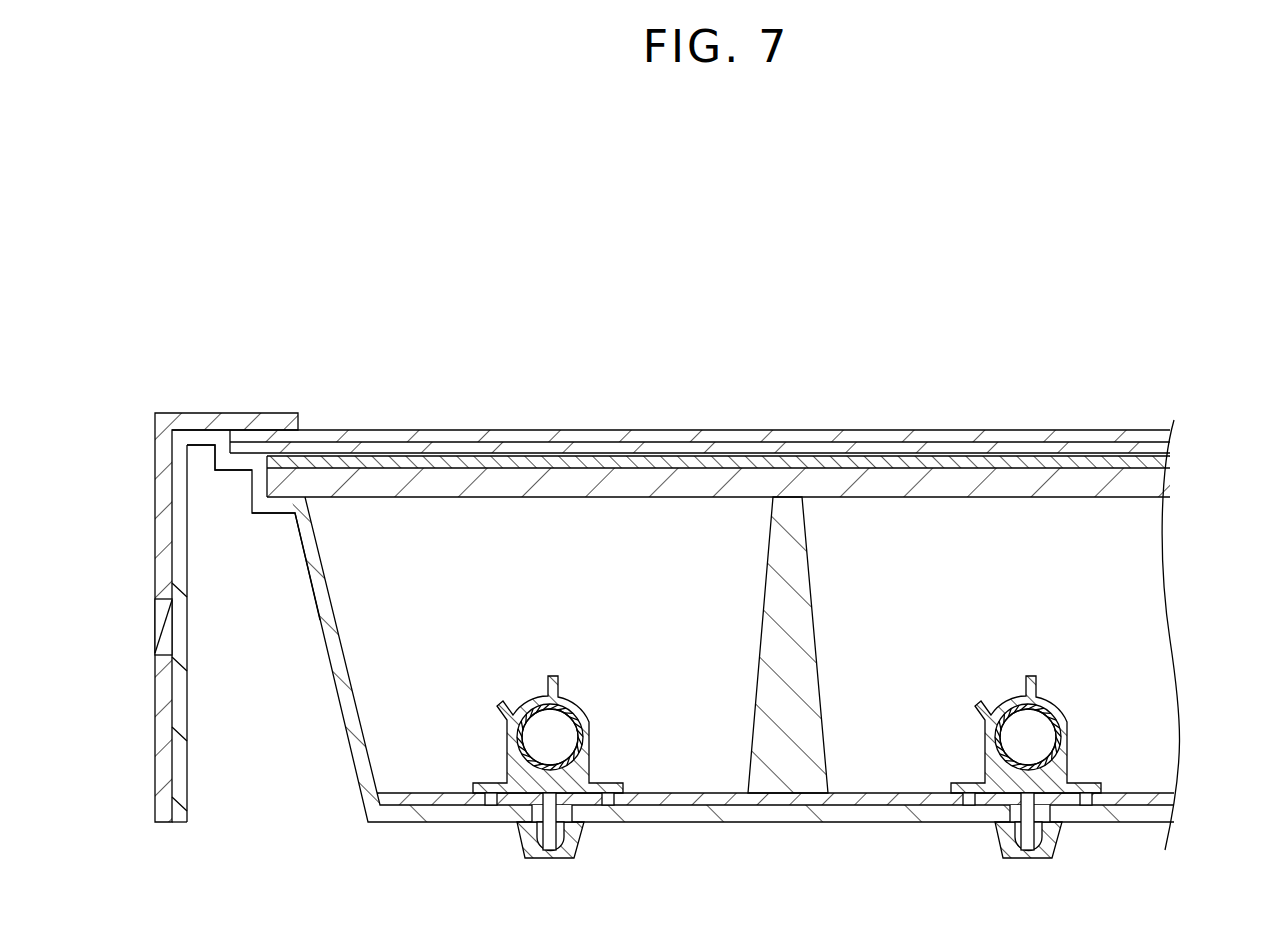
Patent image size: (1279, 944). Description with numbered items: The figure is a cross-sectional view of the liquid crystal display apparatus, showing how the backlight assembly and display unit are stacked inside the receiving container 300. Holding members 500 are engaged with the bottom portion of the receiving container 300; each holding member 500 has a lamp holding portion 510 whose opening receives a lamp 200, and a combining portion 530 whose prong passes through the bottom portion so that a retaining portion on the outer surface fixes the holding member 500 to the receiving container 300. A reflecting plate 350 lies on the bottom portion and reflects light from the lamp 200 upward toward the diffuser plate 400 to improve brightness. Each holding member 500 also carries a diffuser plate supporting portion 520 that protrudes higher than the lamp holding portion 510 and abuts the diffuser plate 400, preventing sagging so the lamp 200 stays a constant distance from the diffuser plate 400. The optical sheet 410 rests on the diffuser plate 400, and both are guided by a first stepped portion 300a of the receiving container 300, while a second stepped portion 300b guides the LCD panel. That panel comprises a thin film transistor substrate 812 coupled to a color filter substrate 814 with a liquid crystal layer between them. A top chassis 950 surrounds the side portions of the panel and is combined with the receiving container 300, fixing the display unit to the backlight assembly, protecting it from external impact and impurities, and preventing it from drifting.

The lamp 200 is at (1057, 703).
The receiving container 300 is at (1168, 812).
The first stepped portion 300a is at (290, 470).
The second stepped portion 300b is at (233, 447).
The reflecting plate 350 is at (1175, 796).
The diffuser plate 400 is at (1163, 490).
The optical sheet 410 is at (1166, 462).
The holding member 500 is at (652, 784).
The lamp holding portion 510 is at (1068, 740).
The diffuser plate supporting portion 520 is at (822, 748).
The combining portion 530 is at (1058, 846).
The thin film transistor substrate 812 is at (1168, 447).
The color filter substrate 814 is at (1172, 433).
The top chassis 950 is at (165, 570).